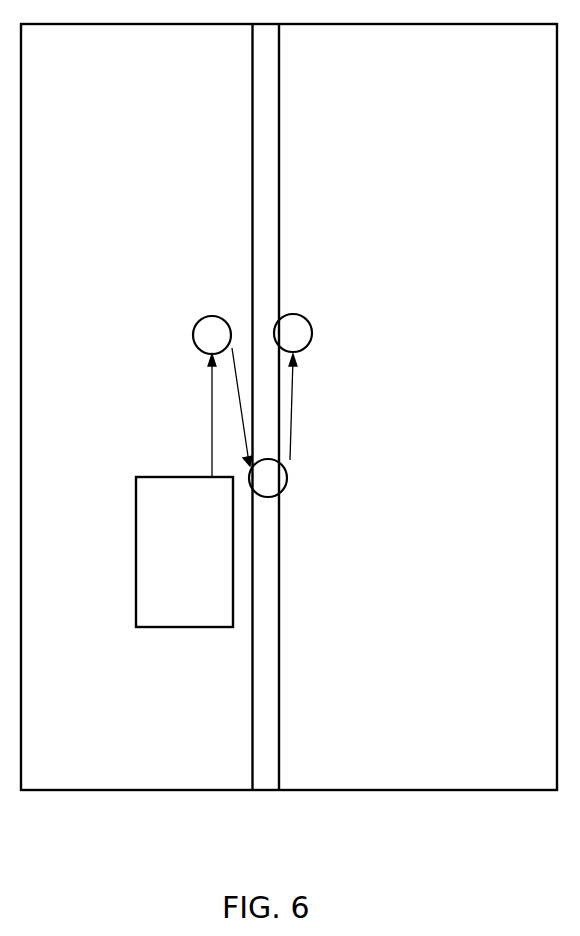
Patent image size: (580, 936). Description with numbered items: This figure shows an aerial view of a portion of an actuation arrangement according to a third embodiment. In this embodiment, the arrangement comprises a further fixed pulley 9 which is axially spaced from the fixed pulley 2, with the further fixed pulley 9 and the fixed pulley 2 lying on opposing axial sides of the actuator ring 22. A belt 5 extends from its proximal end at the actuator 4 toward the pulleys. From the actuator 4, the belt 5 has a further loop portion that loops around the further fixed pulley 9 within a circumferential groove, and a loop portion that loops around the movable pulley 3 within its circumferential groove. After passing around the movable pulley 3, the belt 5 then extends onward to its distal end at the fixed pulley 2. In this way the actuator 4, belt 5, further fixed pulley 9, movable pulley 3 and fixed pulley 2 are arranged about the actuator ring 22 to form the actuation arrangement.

The actuator ring 22 is at (268, 90).
The further fixed pulley 9 is at (193, 331).
The fixed pulley 2 is at (312, 326).
The movable pulley 3 is at (285, 481).
The actuator 4 is at (160, 553).
The belt 5 is at (211, 400).